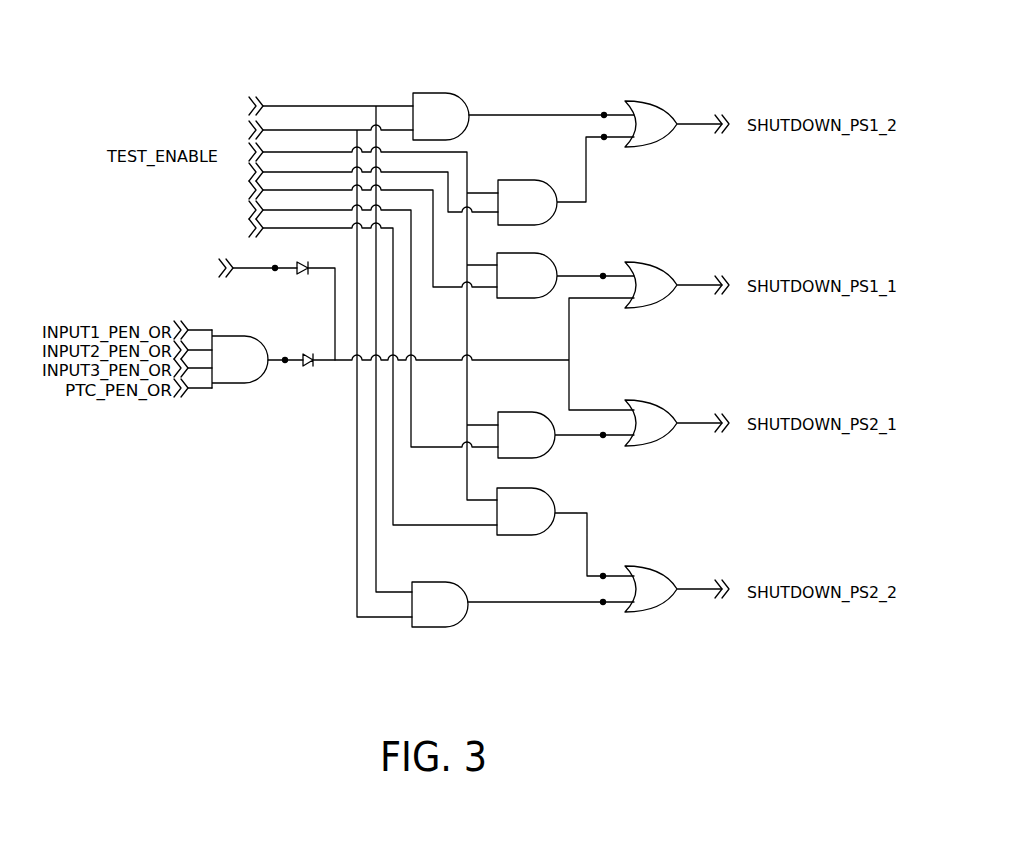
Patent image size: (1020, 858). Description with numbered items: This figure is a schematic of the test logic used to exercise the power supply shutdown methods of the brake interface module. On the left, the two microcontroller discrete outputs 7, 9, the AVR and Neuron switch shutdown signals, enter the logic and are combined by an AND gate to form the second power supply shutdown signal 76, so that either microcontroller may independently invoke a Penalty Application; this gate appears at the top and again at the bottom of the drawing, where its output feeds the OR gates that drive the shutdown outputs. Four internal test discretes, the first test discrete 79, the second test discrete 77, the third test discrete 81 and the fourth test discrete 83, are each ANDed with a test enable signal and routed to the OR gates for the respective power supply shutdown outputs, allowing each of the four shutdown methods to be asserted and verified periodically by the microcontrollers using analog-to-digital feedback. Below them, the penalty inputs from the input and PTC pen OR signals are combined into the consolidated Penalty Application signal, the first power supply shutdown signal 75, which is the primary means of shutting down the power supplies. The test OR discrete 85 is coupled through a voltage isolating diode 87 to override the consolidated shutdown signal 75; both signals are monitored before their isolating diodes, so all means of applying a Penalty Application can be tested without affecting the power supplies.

The discrete output 7 is at (78, 98).
The discrete output 9 is at (63, 140).
The Test_PS1_2 test discrete 79 is at (118, 173).
The Test_PS1_1 test discrete 77 is at (118, 193).
The Test_PS2_1 test discrete 81 is at (120, 212).
The Test_PS2_2 test discrete 83 is at (120, 240).
The Test_OR test discrete 85 is at (147, 278).
The voltage isolating diode 87 is at (298, 262).
The PS Shutdown 1 75 is at (345, 362).
The PS Shutdown 2 76 is at (533, 113).